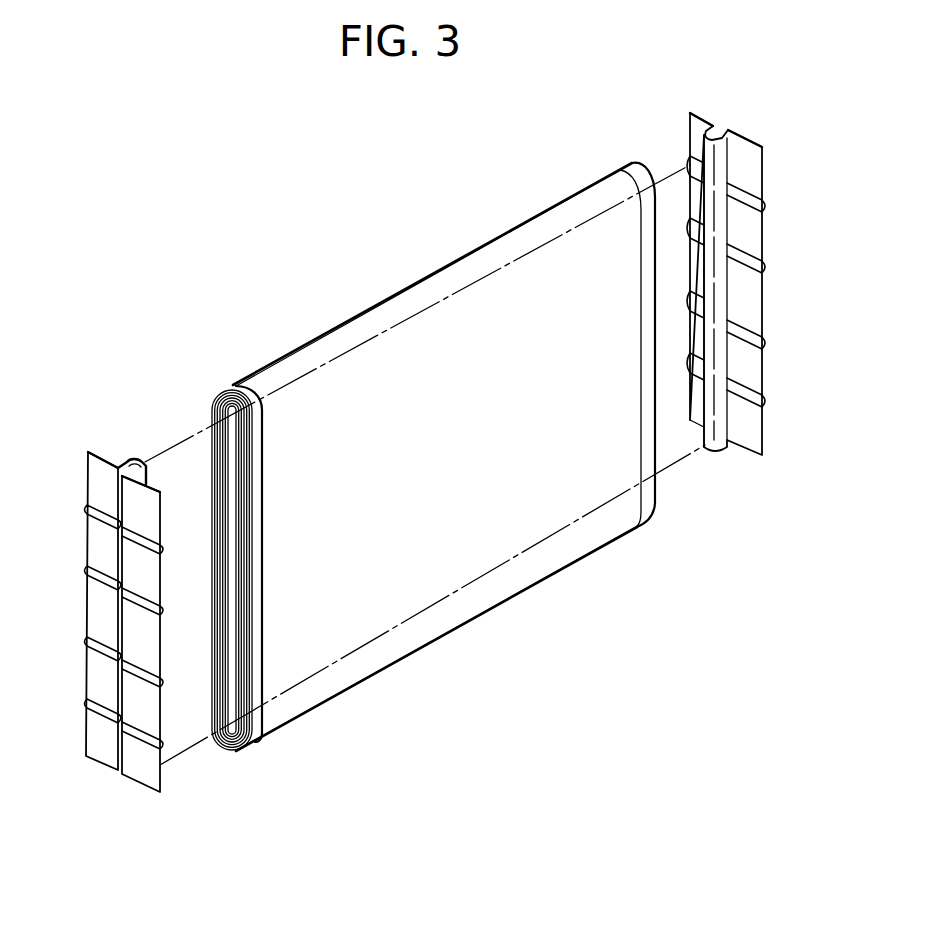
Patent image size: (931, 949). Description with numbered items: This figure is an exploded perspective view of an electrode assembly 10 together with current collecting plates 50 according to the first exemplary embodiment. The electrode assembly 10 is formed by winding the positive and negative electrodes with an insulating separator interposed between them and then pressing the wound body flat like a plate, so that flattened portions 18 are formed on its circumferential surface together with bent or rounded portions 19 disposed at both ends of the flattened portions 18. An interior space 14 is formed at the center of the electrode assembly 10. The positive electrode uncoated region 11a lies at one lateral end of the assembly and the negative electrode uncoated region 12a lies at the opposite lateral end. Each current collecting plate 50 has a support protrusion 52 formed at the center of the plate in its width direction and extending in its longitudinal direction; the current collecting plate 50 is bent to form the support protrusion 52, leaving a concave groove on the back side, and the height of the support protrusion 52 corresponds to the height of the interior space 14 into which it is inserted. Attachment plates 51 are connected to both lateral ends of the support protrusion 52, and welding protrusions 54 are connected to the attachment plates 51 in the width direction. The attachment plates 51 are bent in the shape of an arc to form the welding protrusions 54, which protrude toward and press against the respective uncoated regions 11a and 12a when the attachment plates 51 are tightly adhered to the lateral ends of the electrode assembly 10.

The electrode assembly 10 is at (459, 490).
The positive electrode uncoated region 11a is at (253, 708).
The negative electrode uncoated region 12a is at (648, 500).
The interior space 14 is at (218, 700).
The flattened portion 18 is at (412, 527).
The bent portion 19 is at (414, 300).
The current collecting plate 50 is at (102, 575).
The attachment plate 51 is at (97, 610).
The support protrusion 52 is at (135, 458).
The welding protrusion 54 is at (86, 566).